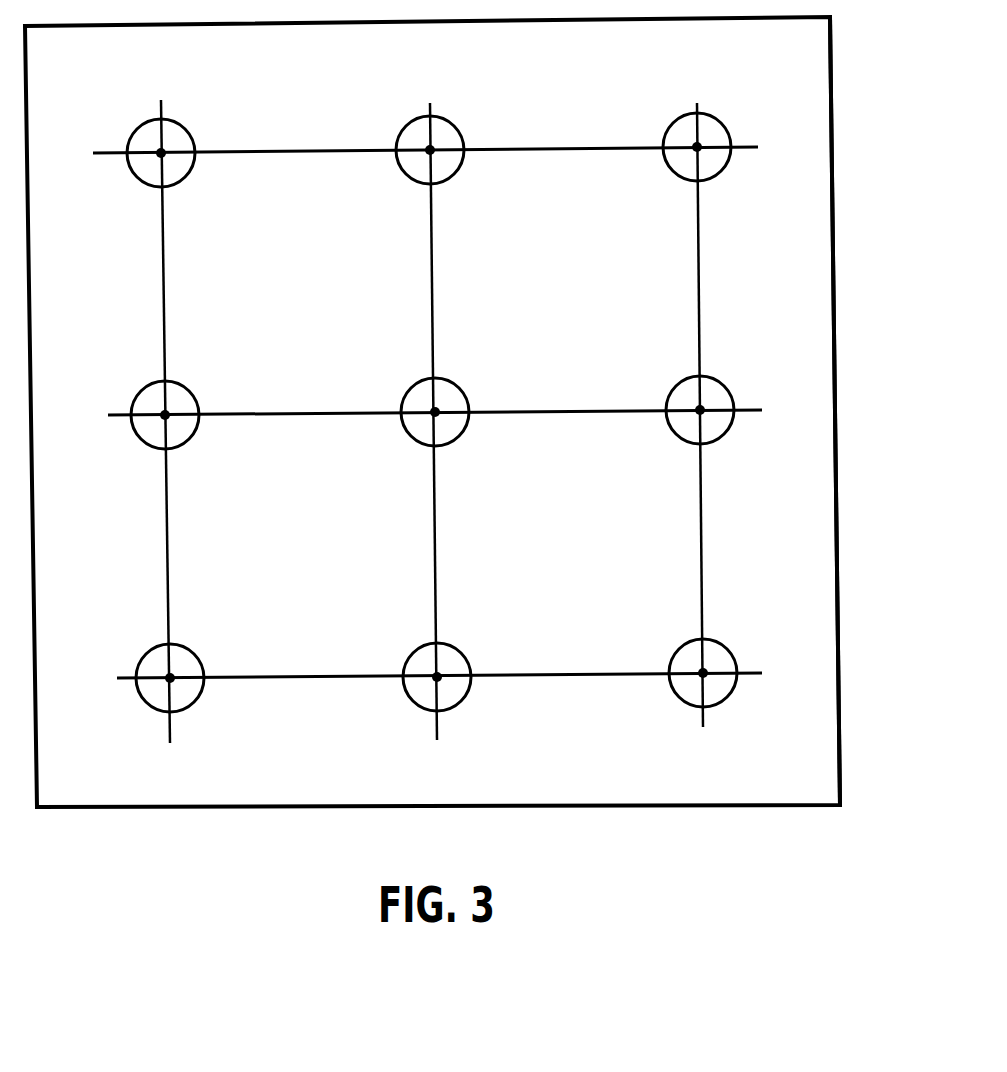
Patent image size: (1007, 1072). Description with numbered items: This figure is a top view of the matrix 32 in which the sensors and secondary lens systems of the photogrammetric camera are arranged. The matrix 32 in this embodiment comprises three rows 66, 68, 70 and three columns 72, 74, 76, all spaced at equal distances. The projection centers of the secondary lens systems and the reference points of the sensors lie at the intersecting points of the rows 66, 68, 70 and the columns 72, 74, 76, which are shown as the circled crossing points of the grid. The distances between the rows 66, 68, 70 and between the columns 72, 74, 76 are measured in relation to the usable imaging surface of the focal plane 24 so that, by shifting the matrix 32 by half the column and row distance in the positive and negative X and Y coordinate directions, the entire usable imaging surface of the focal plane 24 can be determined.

The focal plane 24 is at (803, 156).
The matrix 32 is at (755, 583).
The row 66 is at (538, 145).
The row 68 is at (572, 408).
The row 70 is at (570, 672).
The column 72 is at (165, 297).
The column 74 is at (432, 282).
The column 76 is at (698, 288).